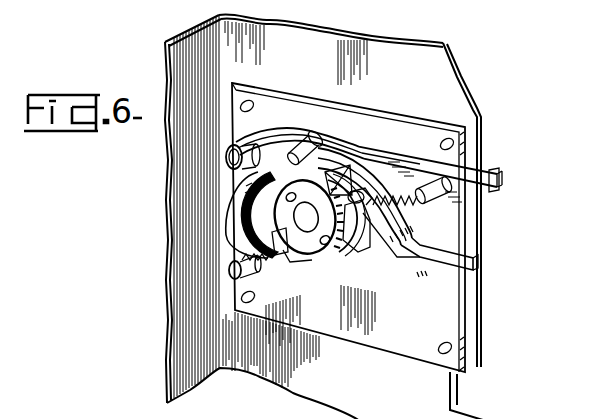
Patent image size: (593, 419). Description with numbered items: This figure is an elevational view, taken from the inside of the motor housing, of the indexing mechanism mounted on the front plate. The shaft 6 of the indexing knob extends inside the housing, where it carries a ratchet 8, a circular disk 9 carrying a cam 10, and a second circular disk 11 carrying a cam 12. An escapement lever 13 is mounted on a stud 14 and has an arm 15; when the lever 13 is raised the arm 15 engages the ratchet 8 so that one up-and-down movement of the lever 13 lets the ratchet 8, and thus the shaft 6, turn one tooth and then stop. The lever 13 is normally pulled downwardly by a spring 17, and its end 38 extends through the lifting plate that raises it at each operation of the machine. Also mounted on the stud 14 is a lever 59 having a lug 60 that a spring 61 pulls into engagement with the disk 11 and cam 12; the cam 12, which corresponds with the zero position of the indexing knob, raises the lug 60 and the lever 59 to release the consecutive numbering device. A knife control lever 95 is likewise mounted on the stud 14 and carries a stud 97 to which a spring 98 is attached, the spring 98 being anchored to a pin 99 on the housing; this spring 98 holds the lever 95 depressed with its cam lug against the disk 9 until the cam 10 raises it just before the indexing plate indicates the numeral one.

The shaft 6 is at (310, 230).
The ratchet 8 is at (357, 252).
The circular disk 9 is at (322, 188).
The cam 10 is at (281, 232).
The circular disk 11 is at (336, 246).
The cam 12 is at (302, 258).
The lever 13 is at (465, 182).
The stud 14 is at (230, 160).
The arm 15 is at (247, 213).
The spring 17 is at (398, 200).
The end 38 is at (499, 187).
The lever 59 is at (418, 260).
The lug 60 is at (320, 173).
The spring 61 is at (345, 198).
The knife control lever 95 is at (453, 250).
The stud 97 is at (305, 133).
The spring 98 is at (273, 163).
The pin 99 is at (233, 270).